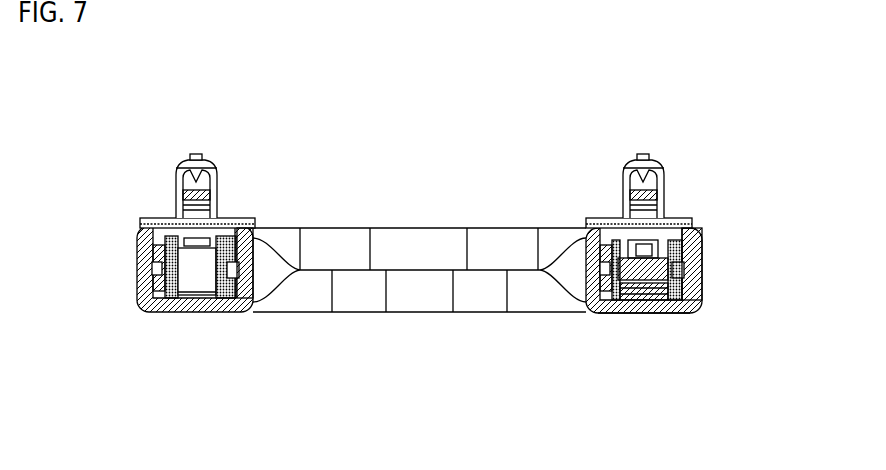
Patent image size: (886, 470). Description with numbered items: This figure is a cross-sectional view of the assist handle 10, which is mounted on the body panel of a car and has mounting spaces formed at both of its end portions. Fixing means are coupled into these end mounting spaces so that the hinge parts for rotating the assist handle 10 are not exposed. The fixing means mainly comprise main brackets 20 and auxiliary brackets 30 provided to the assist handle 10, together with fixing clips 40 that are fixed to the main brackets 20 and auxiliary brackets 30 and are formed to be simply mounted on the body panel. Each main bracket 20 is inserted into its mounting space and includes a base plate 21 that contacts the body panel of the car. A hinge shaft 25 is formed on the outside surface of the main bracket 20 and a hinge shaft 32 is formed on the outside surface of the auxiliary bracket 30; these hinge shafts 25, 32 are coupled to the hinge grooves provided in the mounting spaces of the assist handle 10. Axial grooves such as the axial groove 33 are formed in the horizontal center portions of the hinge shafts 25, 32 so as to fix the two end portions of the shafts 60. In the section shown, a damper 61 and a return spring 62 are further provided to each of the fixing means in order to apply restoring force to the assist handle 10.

The assist handle 10 is at (403, 248).
The main bracket 20 is at (600, 316).
The base plate 21 is at (247, 216).
The hinge shaft 25 is at (243, 316).
The auxiliary bracket 30 is at (163, 313).
The hinge shaft 32 is at (706, 234).
The axial groove 33 is at (676, 216).
The fixing clip 40 is at (195, 158).
The shaft 60 is at (226, 316).
The damper 61 is at (193, 318).
The return spring 62 is at (650, 314).